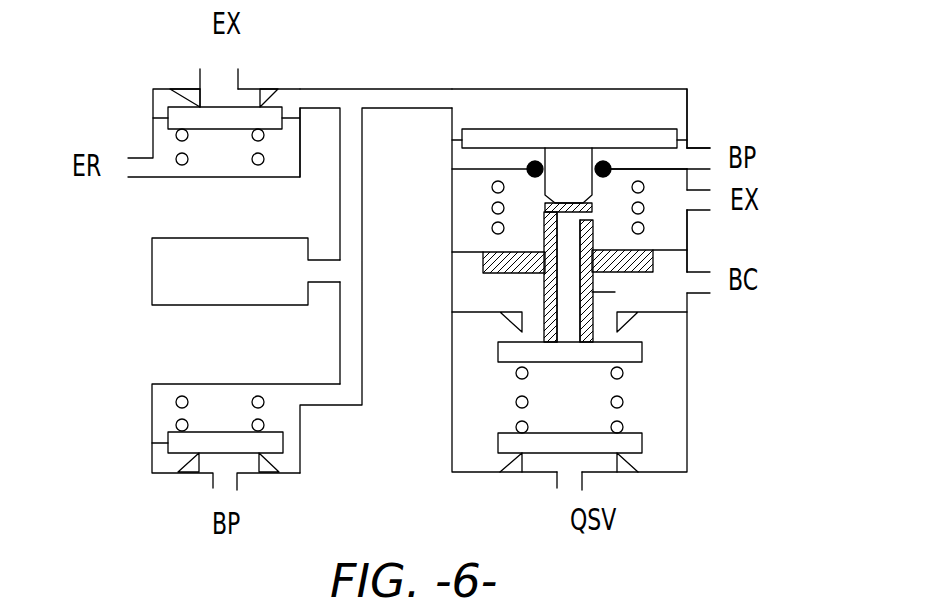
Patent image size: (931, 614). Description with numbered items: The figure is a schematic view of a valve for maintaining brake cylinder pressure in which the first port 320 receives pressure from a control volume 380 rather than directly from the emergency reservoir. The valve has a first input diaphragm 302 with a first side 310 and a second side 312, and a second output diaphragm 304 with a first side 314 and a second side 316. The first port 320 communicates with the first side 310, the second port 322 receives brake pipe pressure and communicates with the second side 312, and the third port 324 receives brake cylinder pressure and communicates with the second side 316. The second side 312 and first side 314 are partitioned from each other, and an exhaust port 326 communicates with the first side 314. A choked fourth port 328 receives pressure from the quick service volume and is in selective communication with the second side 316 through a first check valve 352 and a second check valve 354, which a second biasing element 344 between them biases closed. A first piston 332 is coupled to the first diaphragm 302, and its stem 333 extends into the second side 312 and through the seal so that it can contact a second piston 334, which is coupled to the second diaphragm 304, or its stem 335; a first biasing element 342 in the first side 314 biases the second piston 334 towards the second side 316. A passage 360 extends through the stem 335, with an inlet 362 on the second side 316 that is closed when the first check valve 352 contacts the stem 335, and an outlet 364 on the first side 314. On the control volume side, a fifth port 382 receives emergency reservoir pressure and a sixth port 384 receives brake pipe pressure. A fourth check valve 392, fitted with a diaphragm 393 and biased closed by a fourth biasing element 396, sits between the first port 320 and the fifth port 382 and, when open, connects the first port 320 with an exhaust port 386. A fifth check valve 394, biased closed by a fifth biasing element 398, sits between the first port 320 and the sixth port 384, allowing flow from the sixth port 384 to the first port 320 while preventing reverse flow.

The first input diaphragm 302 is at (690, 137).
The second output diaphragm 304 is at (690, 251).
The first side of the first diaphragm 310 is at (606, 283).
The second side of the first diaphragm 312 is at (712, 152).
The first side of the second diaphragm 314 is at (690, 238).
The second side of the second diaphragm 316 is at (602, 300).
The first port 320 is at (443, 97).
The second port 322 is at (652, 158).
The third port 324 is at (718, 268).
The exhaust port 326 is at (712, 205).
The fourth port 328 is at (558, 492).
The first piston 332 is at (603, 128).
The stem of the first piston 333 is at (563, 158).
The second piston 334 is at (648, 294).
The stem of the second piston 335 is at (648, 352).
The first biasing element 342 is at (712, 168).
The second biasing element 344 is at (654, 439).
The first check valve 352 is at (629, 399).
The second check valve 354 is at (690, 458).
The passage 360 is at (557, 322).
The inlet of the passage 362 is at (565, 348).
The outlet of the passage 364 is at (599, 211).
The control volume 380 is at (250, 285).
The fifth port 382 is at (183, 116).
The sixth port 384 is at (215, 441).
The exhaust port 386 is at (220, 64).
The fourth check valve 392 is at (214, 110).
The diaphragm 393 is at (156, 115).
The fifth check valve 394 is at (166, 444).
The fourth biasing element 396 is at (192, 160).
The fifth biasing element 398 is at (180, 392).